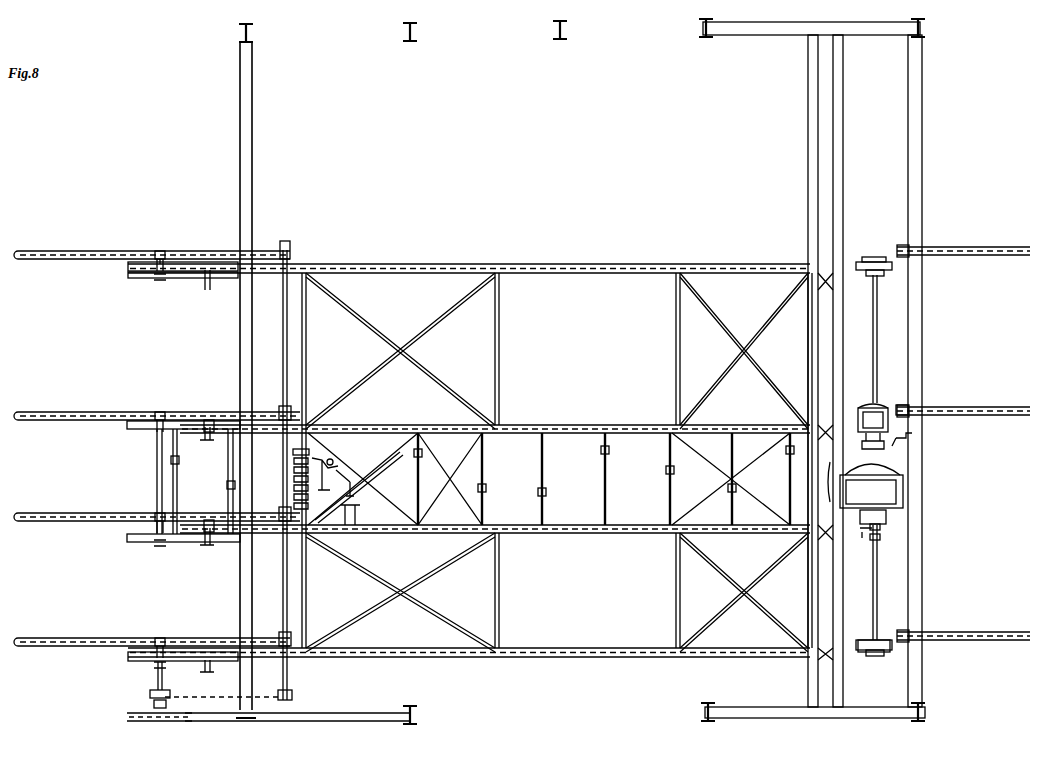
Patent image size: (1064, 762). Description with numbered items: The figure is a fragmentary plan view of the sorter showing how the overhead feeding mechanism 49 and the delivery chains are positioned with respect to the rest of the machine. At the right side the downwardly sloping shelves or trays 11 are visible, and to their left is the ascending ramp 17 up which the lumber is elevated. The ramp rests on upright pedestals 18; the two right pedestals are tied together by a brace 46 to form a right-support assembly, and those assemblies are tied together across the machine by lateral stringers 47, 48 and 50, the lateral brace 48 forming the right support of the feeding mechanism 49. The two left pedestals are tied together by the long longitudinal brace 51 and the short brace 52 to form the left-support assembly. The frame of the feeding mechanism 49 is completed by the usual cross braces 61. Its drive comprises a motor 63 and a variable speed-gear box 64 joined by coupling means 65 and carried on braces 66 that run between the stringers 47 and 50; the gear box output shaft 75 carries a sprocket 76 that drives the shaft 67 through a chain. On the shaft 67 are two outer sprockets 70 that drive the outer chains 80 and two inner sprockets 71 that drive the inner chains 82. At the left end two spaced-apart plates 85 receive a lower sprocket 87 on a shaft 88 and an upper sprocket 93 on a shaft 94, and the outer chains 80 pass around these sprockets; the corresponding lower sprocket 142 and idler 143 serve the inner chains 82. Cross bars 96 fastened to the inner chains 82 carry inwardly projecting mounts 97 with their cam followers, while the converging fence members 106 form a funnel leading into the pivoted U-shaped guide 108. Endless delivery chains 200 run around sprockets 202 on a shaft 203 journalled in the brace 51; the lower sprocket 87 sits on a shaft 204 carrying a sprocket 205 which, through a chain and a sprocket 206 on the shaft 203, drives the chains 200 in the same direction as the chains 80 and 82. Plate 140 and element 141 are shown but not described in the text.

The shelves or trays 11 is at (971, 247).
The ascending ramp 17 is at (378, 260).
The upright pedestals 18 is at (246, 32).
The brace 46 is at (736, 710).
The lateral brace or stringer 47 is at (806, 52).
The lateral brace 48 is at (845, 52).
The feeding mechanism 49 is at (502, 326).
The lateral brace or stringer 50 is at (924, 46).
The long longitudinal brace 51 is at (206, 722).
The short brace 52 is at (358, 710).
The cross braces 61 is at (354, 307).
The motor 63 is at (862, 404).
The variable speed-gear box 64 is at (884, 528).
The coupling means 65 is at (848, 465).
The braces 66 is at (902, 402).
The shaft 67 is at (856, 256).
The outer sprockets 70 is at (896, 268).
The inner sprockets 71 is at (865, 412).
The output shaft 75 is at (858, 540).
The sprocket 76 is at (883, 542).
The outer chains 80 is at (504, 262).
The inner chains 82 is at (572, 424).
The plates 85 is at (138, 254).
The sprocket 87 is at (158, 279).
The shaft 88 is at (154, 472).
The sprocket 93 is at (202, 262).
The shaft 94 is at (207, 290).
The cross bars or support bars 96 is at (542, 457).
The mounts 97 is at (544, 489).
The fence members 106 is at (385, 502).
The guide 108 is at (346, 484).
The plate 140 is at (293, 453).
The comb 141 is at (292, 469).
The sprocket 142 is at (144, 438).
The idler 143 is at (214, 420).
The endless chains or belts 200 is at (26, 250).
The sprockets 202 is at (290, 254).
The shaft 203 is at (284, 330).
The shaft 204 is at (148, 684).
The sprocket 205 is at (165, 702).
The sprocket 206 is at (292, 694).